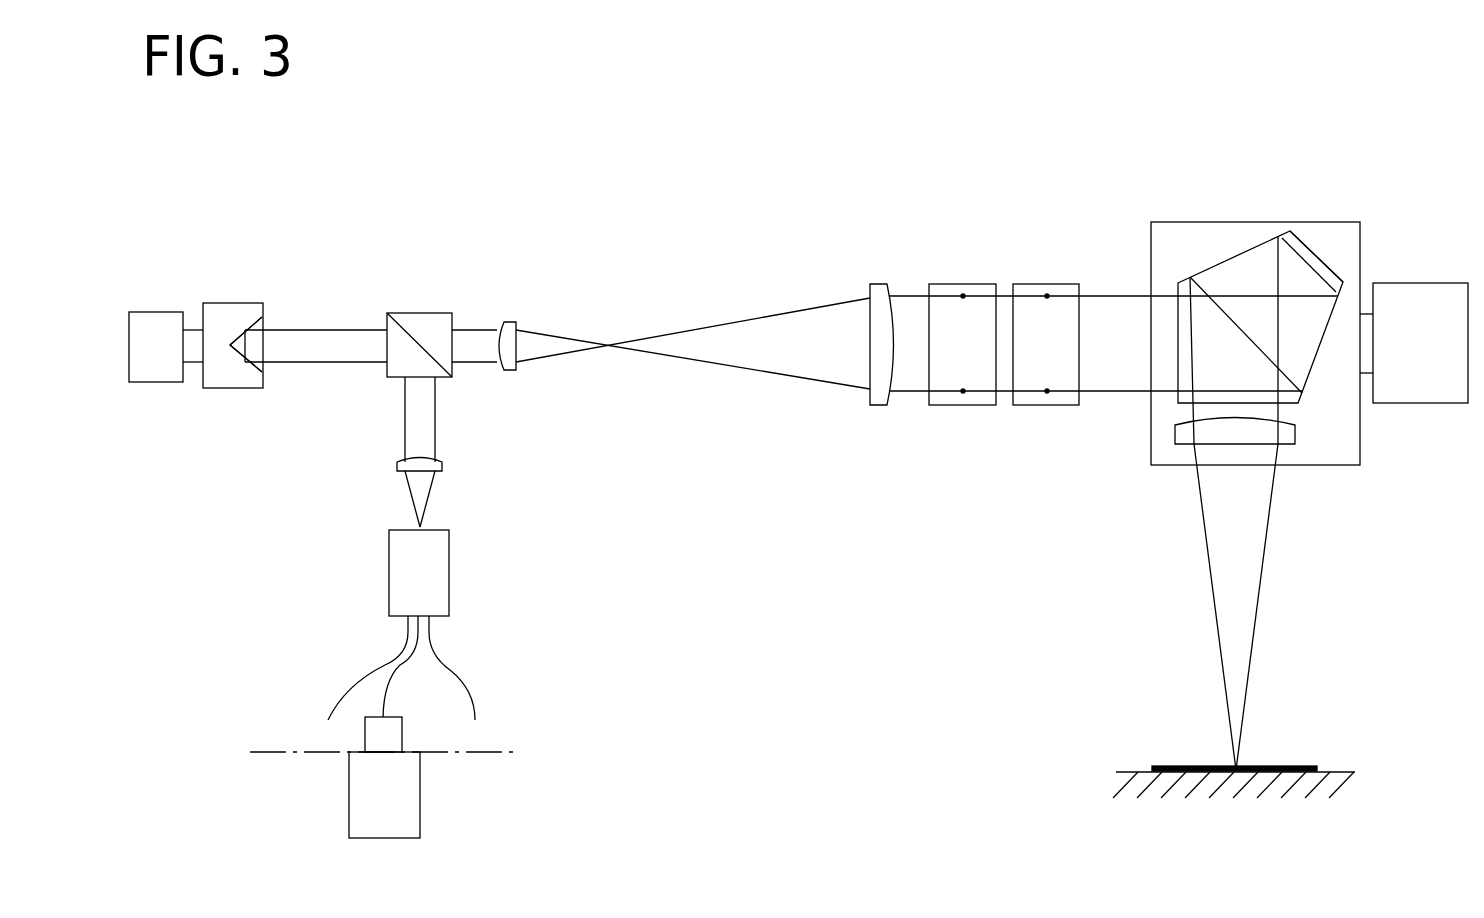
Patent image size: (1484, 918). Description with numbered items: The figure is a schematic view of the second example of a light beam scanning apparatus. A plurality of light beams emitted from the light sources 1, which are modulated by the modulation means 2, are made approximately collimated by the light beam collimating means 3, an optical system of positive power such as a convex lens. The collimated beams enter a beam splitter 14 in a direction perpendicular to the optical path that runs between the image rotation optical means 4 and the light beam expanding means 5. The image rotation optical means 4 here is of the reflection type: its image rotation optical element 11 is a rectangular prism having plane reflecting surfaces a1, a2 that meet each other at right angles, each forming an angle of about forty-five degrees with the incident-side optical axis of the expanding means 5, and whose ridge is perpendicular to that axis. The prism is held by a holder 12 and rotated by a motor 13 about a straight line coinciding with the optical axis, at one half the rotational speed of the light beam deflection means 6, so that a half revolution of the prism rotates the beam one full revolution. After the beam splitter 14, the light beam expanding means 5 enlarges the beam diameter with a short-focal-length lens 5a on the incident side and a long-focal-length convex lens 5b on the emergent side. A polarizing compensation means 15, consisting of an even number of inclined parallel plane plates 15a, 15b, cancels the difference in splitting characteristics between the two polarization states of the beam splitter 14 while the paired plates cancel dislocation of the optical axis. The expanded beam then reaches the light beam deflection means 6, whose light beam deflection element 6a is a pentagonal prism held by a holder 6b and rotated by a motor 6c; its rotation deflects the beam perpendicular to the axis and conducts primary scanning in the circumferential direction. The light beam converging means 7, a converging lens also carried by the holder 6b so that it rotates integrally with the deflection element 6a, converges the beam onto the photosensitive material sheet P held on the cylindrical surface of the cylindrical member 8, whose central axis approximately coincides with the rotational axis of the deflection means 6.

The light source 1 is at (532, 532).
The modulation means 2 is at (408, 803).
The light beam collimating means 3 is at (397, 466).
The image rotation optical means 4 is at (263, 246).
The image rotation optical element 11 is at (248, 374).
The prism holder 12 is at (225, 303).
The motor 13 is at (153, 312).
The reflecting surface a1 is at (255, 367).
The reflecting surface a2 is at (254, 323).
The beam splitter 14 is at (420, 313).
The light beam expanding means 5 is at (500, 192).
The lens 5a is at (509, 322).
The convex lens 5b is at (882, 284).
The polarizing compensation means 15 is at (1078, 193).
The parallel plane plate 15a is at (953, 284).
The parallel plane plate 15b is at (1046, 284).
The light beam deflection means 6 is at (1437, 150).
The light beam deflection element 6a is at (1233, 258).
The holder 6b is at (1322, 222).
The motor 6c is at (1420, 283).
The light beam converging means 7 is at (1203, 438).
The cylindrical member 8 is at (1120, 780).
The photosensitive material sheet P is at (1172, 766).